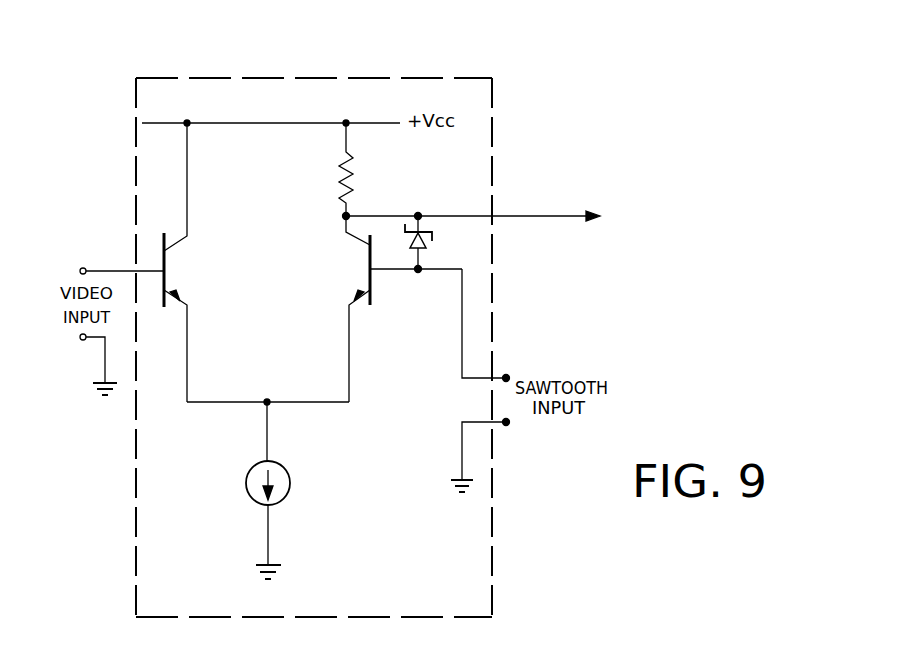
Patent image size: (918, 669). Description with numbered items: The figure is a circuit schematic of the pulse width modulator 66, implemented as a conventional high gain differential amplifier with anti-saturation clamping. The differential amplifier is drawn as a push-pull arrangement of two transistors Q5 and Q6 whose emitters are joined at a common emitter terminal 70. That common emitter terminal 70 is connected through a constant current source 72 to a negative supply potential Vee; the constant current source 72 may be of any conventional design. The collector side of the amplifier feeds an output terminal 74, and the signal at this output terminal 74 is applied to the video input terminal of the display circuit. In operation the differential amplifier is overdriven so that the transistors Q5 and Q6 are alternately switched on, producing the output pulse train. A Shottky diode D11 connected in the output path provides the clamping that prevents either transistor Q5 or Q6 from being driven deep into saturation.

The pulse width modulator 66 is at (248, 87).
The common emitter terminal 70 is at (268, 401).
The constant current source 72 is at (246, 483).
The output terminal 74 is at (447, 216).
The transistor Q5 is at (172, 279).
The transistor Q6 is at (363, 262).
The Shottky diode D11 is at (425, 231).